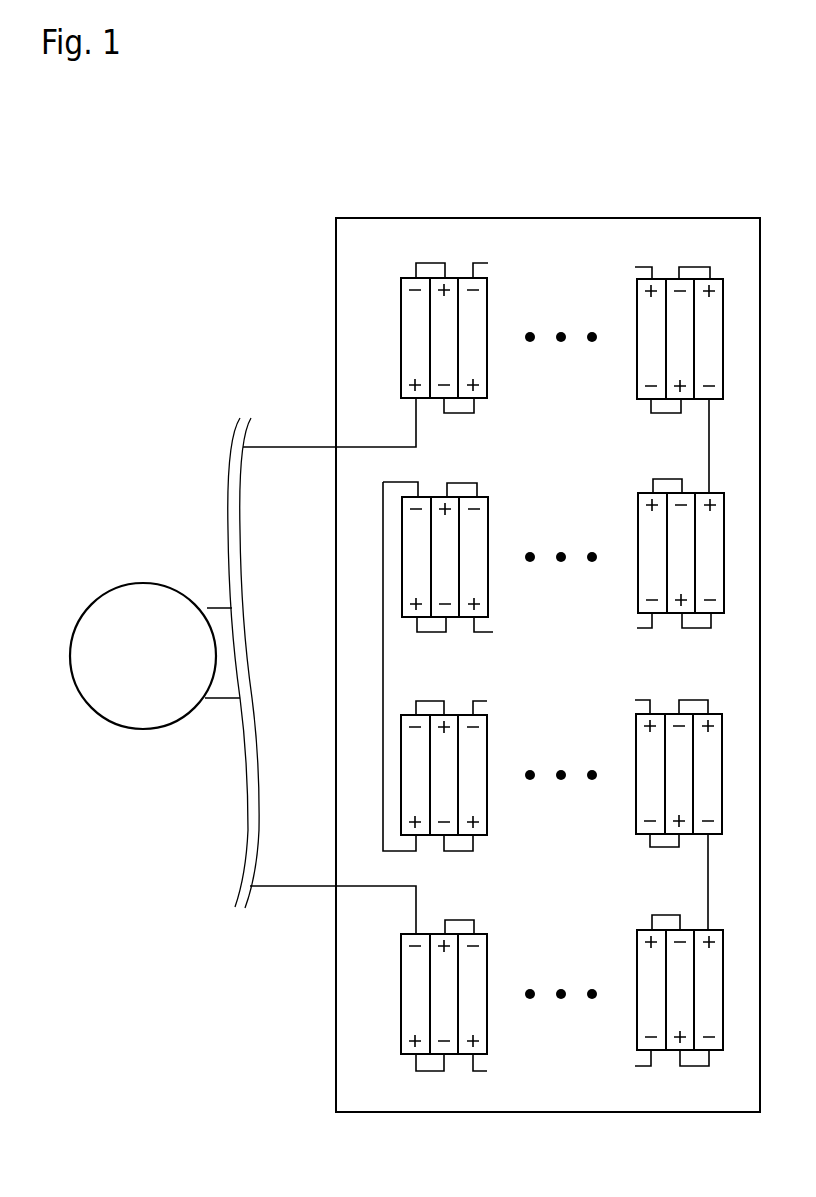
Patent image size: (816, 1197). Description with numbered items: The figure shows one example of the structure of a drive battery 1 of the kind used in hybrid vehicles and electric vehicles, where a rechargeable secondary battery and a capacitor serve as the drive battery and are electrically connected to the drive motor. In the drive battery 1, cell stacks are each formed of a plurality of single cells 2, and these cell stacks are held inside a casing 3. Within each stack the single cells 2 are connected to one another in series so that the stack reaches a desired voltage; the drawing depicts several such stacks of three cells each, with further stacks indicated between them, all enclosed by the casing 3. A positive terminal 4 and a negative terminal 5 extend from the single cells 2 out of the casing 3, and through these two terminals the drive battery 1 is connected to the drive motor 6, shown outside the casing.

The drive battery 1 is at (658, 165).
The single cell 2 is at (415, 360).
The casing 3 is at (494, 218).
The positive terminal 4 is at (292, 446).
The negative terminal 5 is at (283, 887).
The drive motor 6 is at (141, 610).